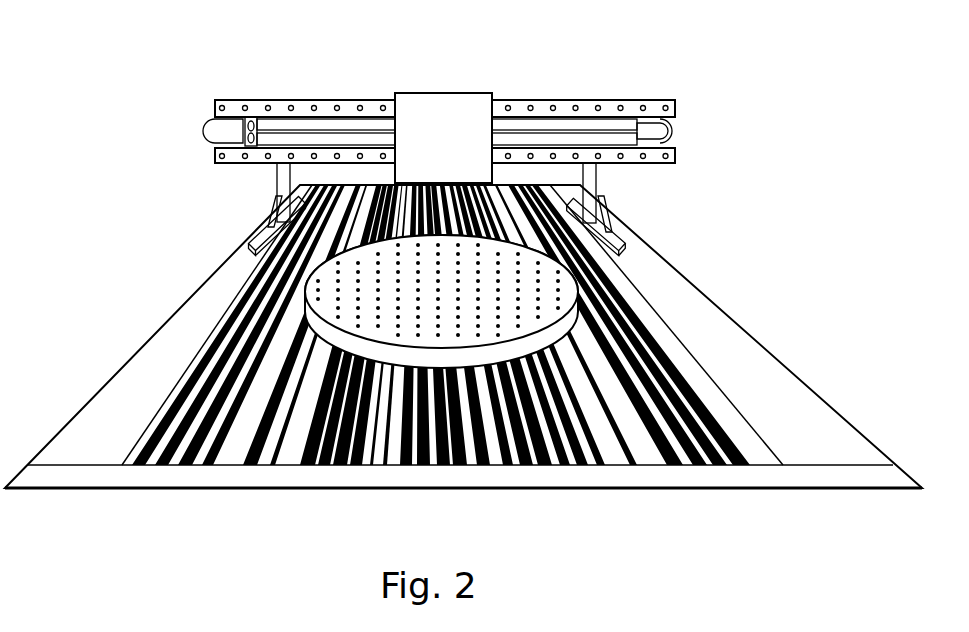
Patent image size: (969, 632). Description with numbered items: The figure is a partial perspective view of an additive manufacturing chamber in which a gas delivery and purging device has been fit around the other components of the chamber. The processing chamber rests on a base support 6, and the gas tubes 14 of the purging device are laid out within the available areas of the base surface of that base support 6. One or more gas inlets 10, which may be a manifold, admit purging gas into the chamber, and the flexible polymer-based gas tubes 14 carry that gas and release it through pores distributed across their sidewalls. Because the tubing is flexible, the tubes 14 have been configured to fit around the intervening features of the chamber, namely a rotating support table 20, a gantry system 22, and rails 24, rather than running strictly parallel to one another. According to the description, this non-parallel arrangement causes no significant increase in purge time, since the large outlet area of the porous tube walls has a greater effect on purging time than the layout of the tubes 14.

The base support 6 is at (165, 338).
The gas inlet 10 is at (743, 477).
The gas tubes 14 is at (140, 445).
The rotating support table 20 is at (497, 325).
The gantry system 22 is at (548, 100).
The rails 24 is at (387, 457).